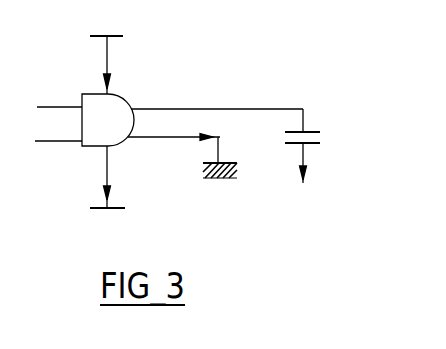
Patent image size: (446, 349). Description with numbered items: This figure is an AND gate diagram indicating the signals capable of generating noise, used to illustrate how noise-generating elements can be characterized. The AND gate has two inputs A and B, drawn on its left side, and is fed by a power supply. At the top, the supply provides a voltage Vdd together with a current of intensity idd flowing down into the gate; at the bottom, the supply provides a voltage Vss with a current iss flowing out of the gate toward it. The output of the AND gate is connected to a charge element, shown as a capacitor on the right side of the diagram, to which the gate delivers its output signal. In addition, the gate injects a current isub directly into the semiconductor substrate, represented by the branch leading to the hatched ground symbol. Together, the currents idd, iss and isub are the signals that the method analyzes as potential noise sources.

The input A is at (51, 105).
The input B is at (50, 139).
The supply voltage Vdd is at (108, 52).
The supply voltage Vss is at (107, 227).
The supply current intensity idd is at (123, 71).
The output current iss is at (123, 177).
The substrate current isub is at (188, 145).